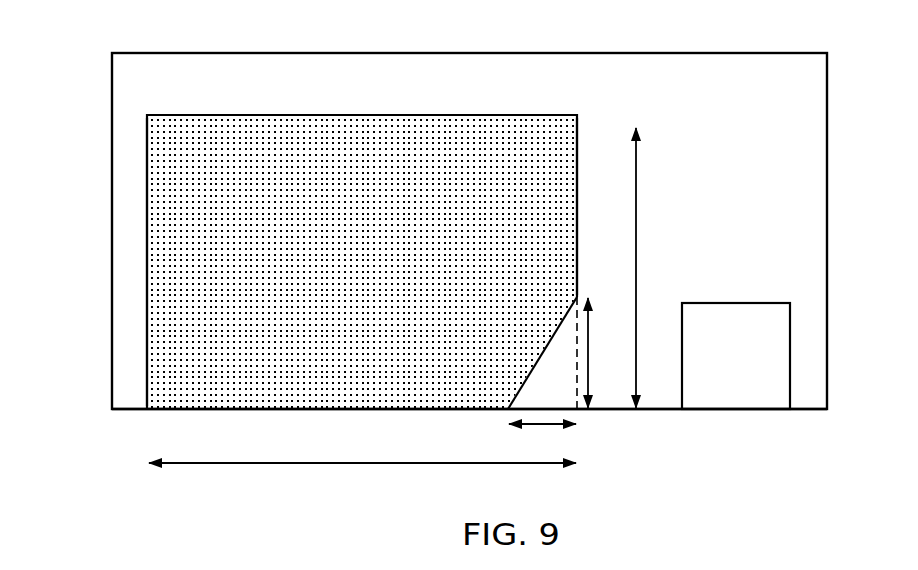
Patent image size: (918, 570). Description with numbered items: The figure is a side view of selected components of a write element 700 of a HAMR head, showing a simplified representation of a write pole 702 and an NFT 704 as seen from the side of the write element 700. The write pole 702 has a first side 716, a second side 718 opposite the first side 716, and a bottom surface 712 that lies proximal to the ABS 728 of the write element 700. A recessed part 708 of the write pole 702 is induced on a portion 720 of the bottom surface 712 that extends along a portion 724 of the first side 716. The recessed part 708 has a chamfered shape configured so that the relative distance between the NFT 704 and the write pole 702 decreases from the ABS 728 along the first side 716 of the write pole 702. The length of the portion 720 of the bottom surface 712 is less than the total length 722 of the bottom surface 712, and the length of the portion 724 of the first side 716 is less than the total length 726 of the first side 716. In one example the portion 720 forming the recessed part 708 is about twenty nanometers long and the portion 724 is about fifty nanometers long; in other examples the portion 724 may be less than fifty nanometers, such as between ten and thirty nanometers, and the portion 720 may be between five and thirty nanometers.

The write element 700 is at (487, 53).
The write pole 702 is at (290, 115).
The NFT 704 is at (718, 303).
The recessed part 708 is at (558, 355).
The bottom surface 712 is at (316, 398).
The first side 716 is at (586, 157).
The second side 718 is at (158, 307).
The portion of the bottom surface 720 is at (542, 443).
The total length of the bottom surface 722 is at (362, 478).
The portion of the first side 724 is at (609, 353).
The total length of the first side 726 is at (657, 268).
The ABS 728 is at (131, 412).